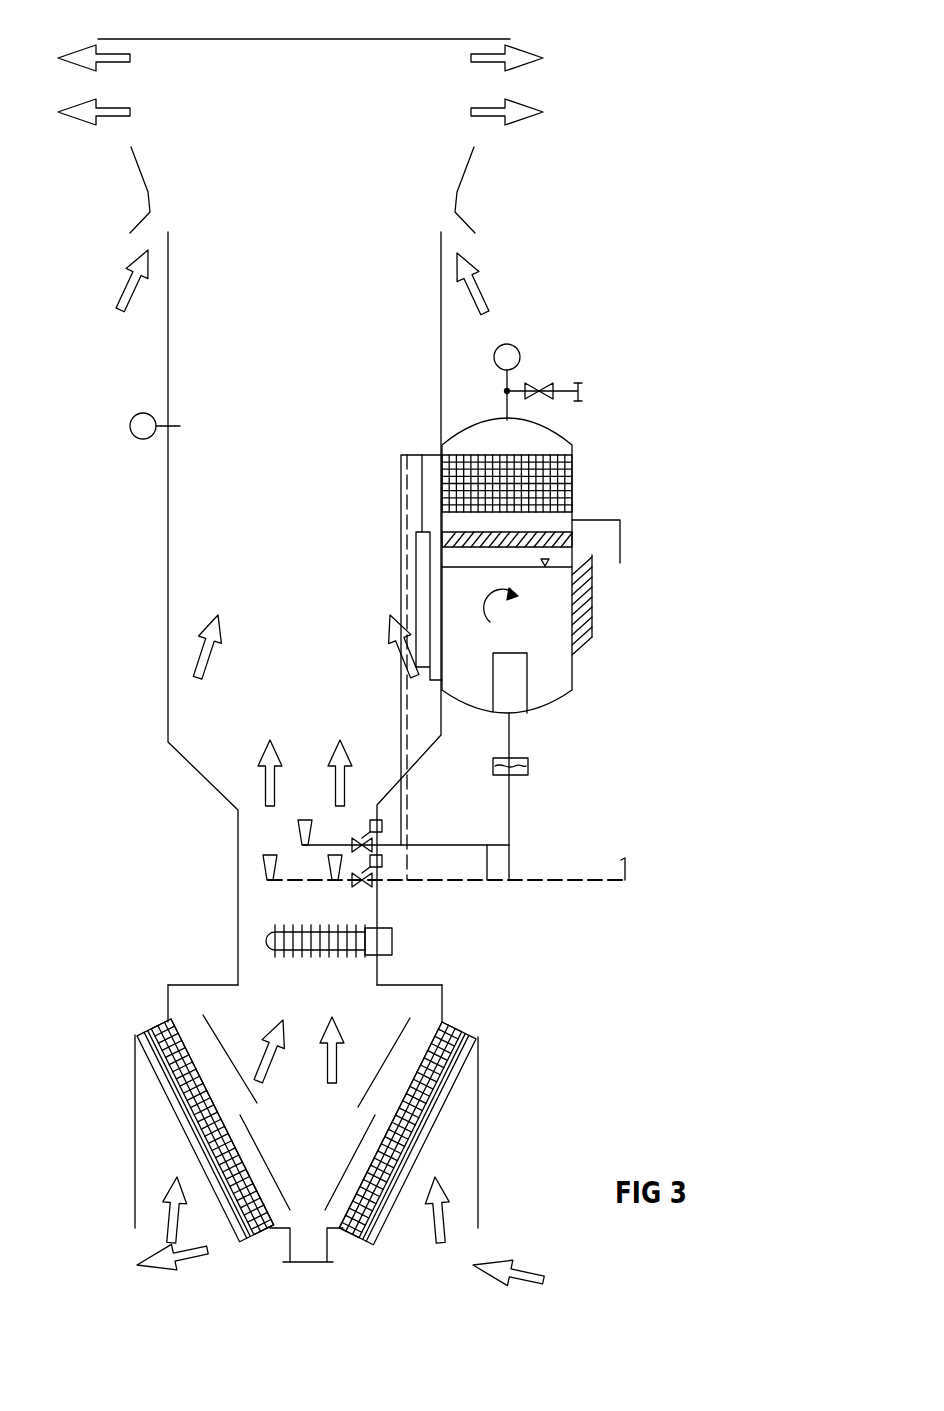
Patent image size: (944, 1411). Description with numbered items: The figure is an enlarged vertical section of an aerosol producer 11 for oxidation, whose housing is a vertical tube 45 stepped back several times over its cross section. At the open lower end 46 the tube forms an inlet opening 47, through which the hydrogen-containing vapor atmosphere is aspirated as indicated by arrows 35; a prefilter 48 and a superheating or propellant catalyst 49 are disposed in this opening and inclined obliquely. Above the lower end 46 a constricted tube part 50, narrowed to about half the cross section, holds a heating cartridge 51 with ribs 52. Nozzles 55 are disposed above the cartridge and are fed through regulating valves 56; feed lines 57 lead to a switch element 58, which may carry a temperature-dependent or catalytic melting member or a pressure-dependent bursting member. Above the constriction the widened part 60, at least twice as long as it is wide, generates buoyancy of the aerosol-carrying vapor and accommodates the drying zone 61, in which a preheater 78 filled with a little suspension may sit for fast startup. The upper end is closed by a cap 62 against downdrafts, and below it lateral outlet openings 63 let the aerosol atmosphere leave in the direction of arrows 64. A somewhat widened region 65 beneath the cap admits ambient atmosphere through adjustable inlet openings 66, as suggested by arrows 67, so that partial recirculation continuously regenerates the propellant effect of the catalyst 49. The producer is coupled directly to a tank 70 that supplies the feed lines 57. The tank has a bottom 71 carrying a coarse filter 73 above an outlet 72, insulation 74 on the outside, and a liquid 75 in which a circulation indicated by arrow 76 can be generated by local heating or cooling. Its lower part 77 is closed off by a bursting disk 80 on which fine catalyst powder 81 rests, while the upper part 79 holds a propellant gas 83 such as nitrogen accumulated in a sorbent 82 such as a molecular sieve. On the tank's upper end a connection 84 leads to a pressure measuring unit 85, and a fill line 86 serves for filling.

The aerosol producer 11 is at (124, 687).
The arrows 35 is at (120, 1267).
The vertical tube 45 is at (168, 398).
The open lower end 46 is at (135, 1128).
The inlet opening 47 is at (457, 1197).
The prefilter 48 is at (432, 1112).
The superheating or propellant catalyst 49 is at (440, 1068).
The constricted tube part 50 is at (238, 902).
The heating cartridge 51 is at (385, 930).
The ribs 52 is at (380, 958).
The nozzles 55 is at (300, 832).
The regulating valves 56 is at (352, 838).
The feed lines 57 is at (487, 880).
The switch element 58 is at (526, 775).
The widened part 60 is at (168, 533).
The drying zone 61 is at (335, 345).
The cap 62 is at (352, 39).
The lateral outlet openings 63 is at (497, 86).
The arrows 64 is at (128, 58).
The region 65 is at (346, 147).
The inlet openings 66 is at (158, 220).
The arrows 67 is at (124, 296).
The tank 70 is at (626, 477).
The bottom 71 is at (572, 697).
The outlet 72 is at (512, 730).
The coarse filter 73 is at (507, 692).
The insulation 74 is at (592, 612).
The liquid 75 is at (543, 597).
The arrow 76 is at (488, 606).
The lower part 77 is at (486, 662).
The preheater 78 is at (425, 600).
The upper part 79 is at (470, 443).
The bursting disk 80 is at (480, 553).
The catalyst powder 81 is at (482, 524).
The sorbent 82 is at (537, 485).
The propellant gas 83 is at (545, 442).
The connection 84 is at (505, 407).
The pressure measuring unit 85 is at (507, 344).
The fill line 86 is at (563, 388).